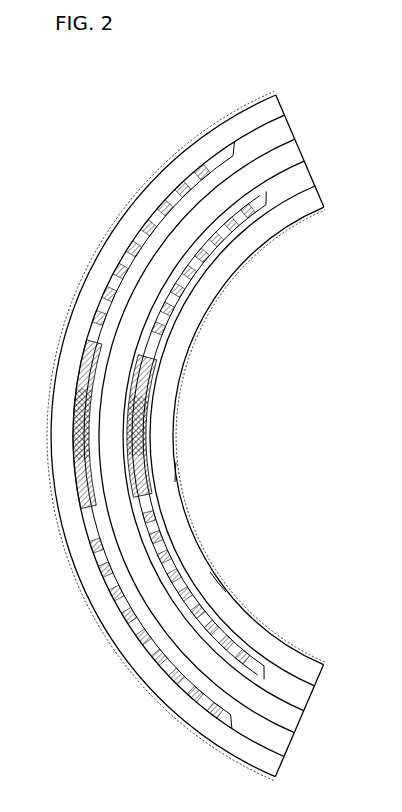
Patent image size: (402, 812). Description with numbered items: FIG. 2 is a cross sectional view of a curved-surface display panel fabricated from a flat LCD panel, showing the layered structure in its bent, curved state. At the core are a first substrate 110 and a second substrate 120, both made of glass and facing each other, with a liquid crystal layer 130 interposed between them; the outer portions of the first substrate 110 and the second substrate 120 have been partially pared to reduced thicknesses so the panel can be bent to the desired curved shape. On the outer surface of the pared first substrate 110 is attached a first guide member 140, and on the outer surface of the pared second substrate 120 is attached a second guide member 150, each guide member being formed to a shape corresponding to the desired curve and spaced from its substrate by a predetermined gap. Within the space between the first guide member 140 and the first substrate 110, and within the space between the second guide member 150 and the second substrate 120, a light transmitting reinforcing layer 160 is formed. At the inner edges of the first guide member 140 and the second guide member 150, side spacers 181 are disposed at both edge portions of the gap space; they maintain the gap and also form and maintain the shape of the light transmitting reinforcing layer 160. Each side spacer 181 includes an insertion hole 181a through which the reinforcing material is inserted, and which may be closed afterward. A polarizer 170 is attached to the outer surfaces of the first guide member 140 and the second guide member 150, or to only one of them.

The first substrate 110 is at (310, 698).
The second substrate 120 is at (290, 744).
The liquid crystal layer 130 is at (300, 721).
The first guide member 140 is at (320, 676).
The second guide member 150 is at (280, 766).
The light transmitting reinforcing layer 160 is at (150, 432).
The polarizer 170 is at (297, 653).
The side spacer 181 is at (223, 588).
The insertion hole 181a is at (180, 480).